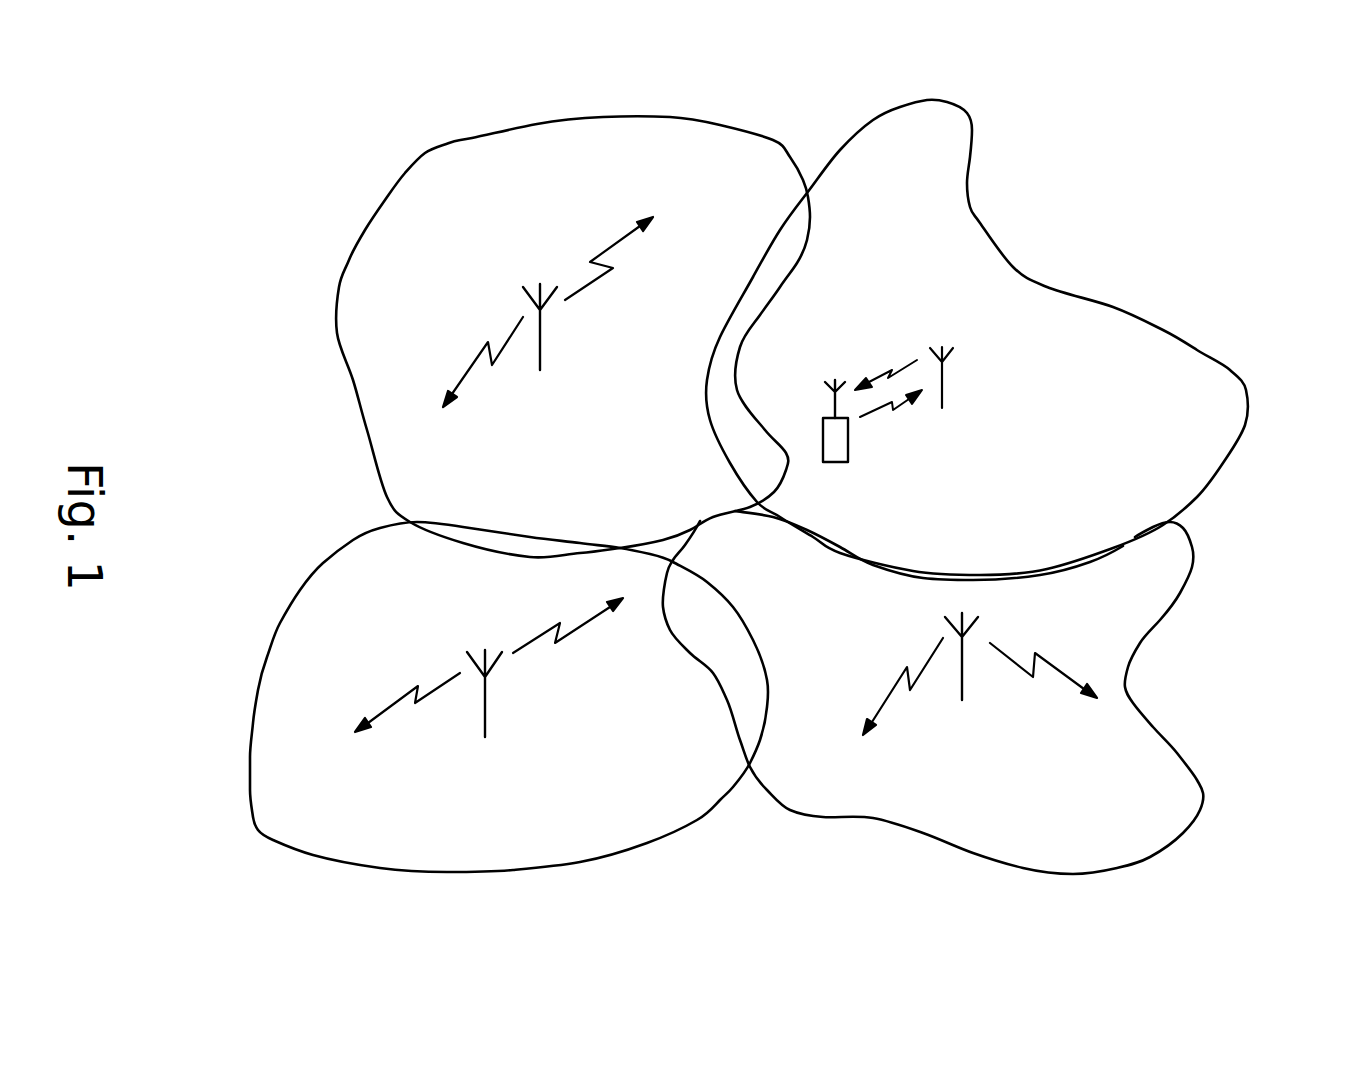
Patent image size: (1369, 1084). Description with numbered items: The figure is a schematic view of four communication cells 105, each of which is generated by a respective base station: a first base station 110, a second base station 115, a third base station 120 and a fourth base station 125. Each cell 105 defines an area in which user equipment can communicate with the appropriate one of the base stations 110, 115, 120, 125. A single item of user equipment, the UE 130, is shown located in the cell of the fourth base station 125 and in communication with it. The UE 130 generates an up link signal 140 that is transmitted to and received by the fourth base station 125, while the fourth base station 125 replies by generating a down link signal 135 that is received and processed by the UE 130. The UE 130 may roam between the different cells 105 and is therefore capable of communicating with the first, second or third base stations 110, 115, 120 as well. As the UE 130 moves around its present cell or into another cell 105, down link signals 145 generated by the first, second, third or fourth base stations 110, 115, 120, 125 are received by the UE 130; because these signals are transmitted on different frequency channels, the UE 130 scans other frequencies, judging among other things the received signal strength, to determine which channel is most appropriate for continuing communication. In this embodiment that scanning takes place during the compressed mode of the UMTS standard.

The communication cell 105 is at (445, 278).
The first base station 110 is at (542, 350).
The second base station 115 is at (487, 704).
The third base station 120 is at (963, 663).
The fourth base station 125 is at (945, 381).
The user equipment (UE) 130 is at (848, 440).
The down link signal 135 is at (902, 362).
The up link signal 140 is at (893, 413).
The down link signals 145 is at (613, 247).